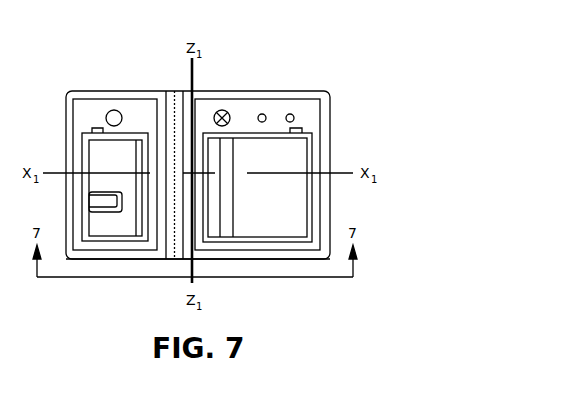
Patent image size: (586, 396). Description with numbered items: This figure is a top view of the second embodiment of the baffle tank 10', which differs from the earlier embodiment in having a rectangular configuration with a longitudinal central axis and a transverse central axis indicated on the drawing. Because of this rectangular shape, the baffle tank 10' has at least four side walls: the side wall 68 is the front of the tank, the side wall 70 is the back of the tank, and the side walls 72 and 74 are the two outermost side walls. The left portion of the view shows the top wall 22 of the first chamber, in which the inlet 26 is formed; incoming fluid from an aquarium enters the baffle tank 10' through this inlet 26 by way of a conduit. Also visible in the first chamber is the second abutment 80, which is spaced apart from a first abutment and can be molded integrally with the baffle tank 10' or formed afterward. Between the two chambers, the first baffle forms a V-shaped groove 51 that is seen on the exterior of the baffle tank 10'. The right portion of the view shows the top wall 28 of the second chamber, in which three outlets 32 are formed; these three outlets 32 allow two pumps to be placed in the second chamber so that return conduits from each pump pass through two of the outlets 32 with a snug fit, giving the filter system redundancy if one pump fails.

The baffle tank 10' is at (368, 49).
The top wall 22 is at (87, 112).
The inlet 26 is at (114, 110).
The top wall 28 is at (305, 112).
The outlets 32 is at (290, 114).
The V-shaped groove 51 is at (174, 92).
The side wall 68 is at (125, 259).
The side wall 70 is at (135, 91).
The side wall 72 is at (331, 140).
The side wall 74 is at (63, 137).
The second abutment 80 is at (102, 193).